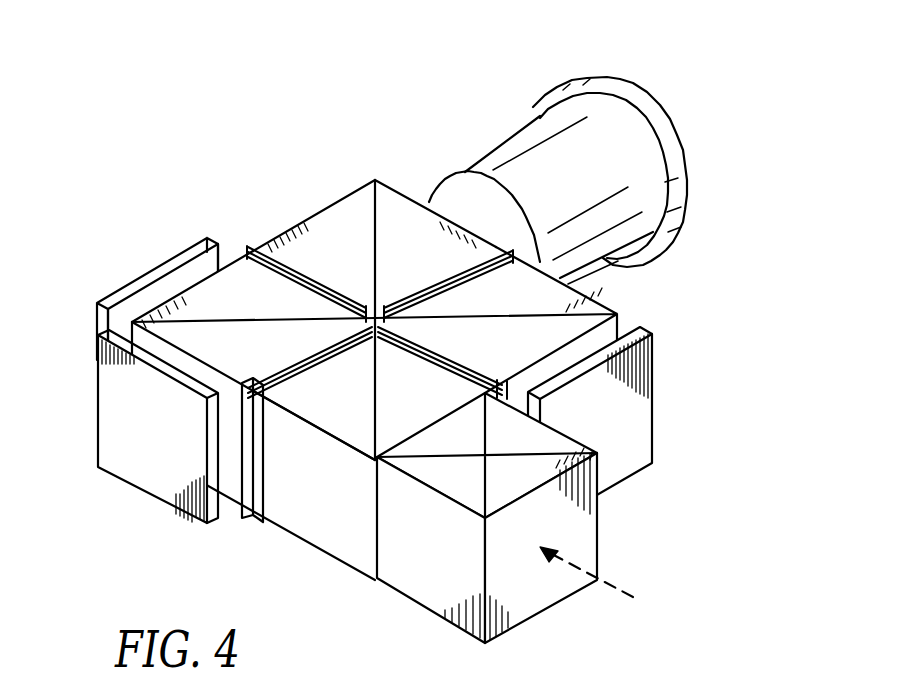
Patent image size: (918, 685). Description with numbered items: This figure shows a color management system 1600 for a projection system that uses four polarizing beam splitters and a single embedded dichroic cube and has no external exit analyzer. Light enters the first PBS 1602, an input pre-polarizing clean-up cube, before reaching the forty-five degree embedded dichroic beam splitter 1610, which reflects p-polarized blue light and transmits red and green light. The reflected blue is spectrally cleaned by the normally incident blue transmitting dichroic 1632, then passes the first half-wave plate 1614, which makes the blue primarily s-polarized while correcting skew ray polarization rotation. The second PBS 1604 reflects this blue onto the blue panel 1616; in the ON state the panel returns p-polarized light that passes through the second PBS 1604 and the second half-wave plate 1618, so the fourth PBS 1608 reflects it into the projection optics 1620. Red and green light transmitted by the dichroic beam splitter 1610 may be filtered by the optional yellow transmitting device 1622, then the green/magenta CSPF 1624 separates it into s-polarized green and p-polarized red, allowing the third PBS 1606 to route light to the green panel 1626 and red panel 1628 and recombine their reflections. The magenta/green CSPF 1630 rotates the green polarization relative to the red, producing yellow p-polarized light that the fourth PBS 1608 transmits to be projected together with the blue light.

The system 1600 is at (279, 78).
The first PBS 1602 is at (432, 599).
The second PBS 1604 is at (560, 302).
The third PBS 1606 is at (177, 306).
The fourth PBS 1608 is at (358, 200).
The dichroic beam splitter 1610 is at (344, 547).
The first half-wave plate 1614 is at (450, 368).
The blue panel 1616 is at (620, 460).
The second half-wave plate 1618 is at (417, 284).
The projection optics 1620 is at (688, 122).
The yellow transmitting device 1622 is at (260, 512).
The green/magenta CSPF 1624 is at (284, 360).
The green panel 1626 is at (146, 478).
The red panel 1628 is at (197, 248).
The magenta/green CSPF 1630 is at (261, 252).
The blue transmitting dichroic 1632 is at (425, 358).